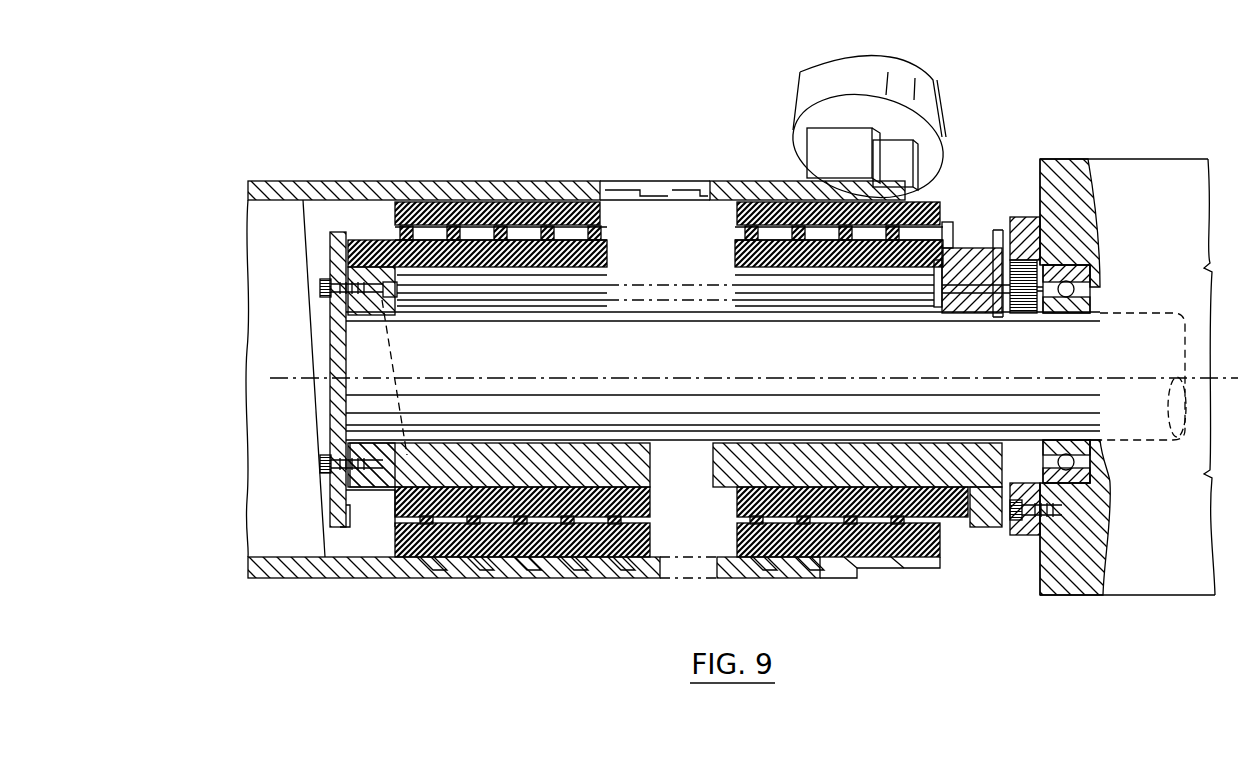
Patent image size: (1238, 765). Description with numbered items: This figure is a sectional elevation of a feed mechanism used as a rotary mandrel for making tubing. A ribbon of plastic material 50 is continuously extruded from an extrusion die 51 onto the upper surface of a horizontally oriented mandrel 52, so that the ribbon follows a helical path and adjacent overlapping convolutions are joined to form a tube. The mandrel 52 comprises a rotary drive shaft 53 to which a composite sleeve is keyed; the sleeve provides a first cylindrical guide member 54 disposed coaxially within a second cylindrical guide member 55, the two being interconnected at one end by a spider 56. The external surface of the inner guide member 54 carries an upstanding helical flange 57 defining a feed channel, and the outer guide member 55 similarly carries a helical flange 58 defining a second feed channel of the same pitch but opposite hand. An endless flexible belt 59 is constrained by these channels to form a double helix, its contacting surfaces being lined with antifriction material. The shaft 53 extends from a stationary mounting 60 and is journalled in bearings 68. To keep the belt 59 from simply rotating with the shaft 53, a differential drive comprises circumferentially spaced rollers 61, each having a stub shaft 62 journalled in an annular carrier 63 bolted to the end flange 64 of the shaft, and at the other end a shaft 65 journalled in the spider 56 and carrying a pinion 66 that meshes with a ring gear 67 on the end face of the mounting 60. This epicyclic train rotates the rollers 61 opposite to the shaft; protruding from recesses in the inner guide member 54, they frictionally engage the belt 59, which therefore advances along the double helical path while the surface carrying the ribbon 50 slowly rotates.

The ribbon of plastic material 50 is at (822, 155).
The extrusion die 51 is at (810, 92).
The mandrel 52 is at (322, 352).
The rotary drive shaft 53 is at (1078, 352).
The first cylindrical guide member 54 is at (600, 468).
The second cylindrical guide member 55 is at (393, 525).
The spider 56 is at (975, 247).
The helical flange 57 is at (496, 487).
The helical flange 58 is at (470, 576).
The endless flexible belt 59 is at (613, 571).
The stationary mounting 60 is at (1128, 158).
The rollers 61 is at (815, 287).
The stub shaft 62 is at (372, 262).
The annular carrier 63 is at (381, 492).
The end flange 64 is at (334, 405).
The shaft 65 is at (975, 287).
The pinion 66 is at (1022, 300).
The ring gear 67 is at (1025, 216).
The bearings 68 is at (1090, 447).